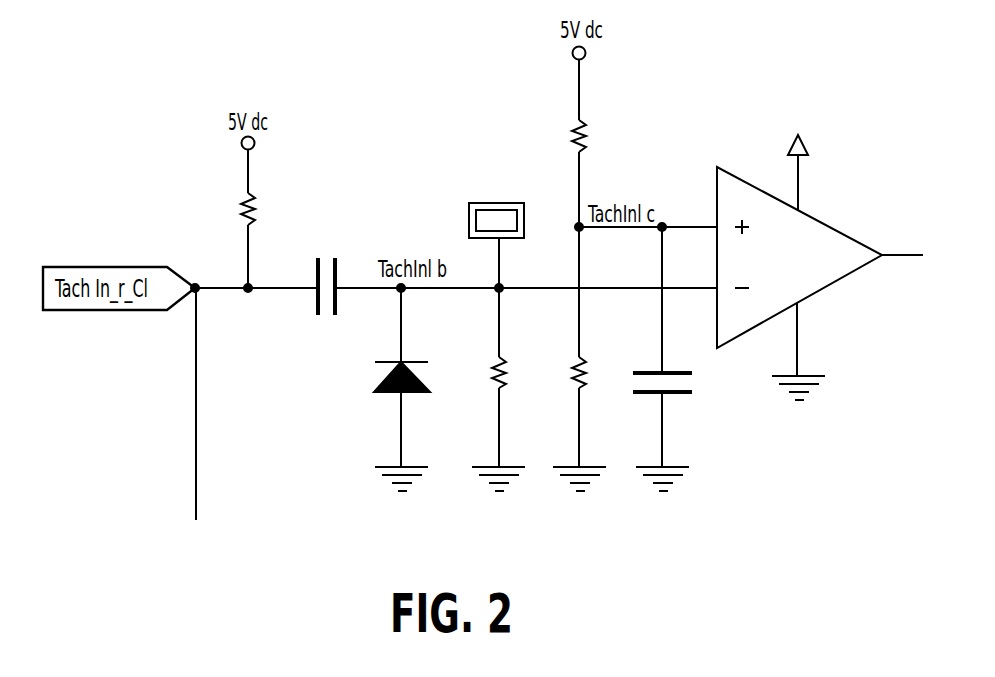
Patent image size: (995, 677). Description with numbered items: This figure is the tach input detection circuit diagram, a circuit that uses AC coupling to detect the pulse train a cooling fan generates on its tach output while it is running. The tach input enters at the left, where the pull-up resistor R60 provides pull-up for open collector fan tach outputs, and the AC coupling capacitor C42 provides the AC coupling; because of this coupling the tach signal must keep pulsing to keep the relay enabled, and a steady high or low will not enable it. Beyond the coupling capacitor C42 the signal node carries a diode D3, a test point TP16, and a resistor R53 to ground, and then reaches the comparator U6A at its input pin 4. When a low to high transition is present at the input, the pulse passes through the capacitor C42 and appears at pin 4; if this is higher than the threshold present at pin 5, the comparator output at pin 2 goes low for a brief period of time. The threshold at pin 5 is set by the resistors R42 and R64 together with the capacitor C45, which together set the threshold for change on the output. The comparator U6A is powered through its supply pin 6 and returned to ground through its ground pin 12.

The pull-up resistor R60 is at (269, 219).
The AC coupling capacitor C42 is at (323, 287).
The signal diode D3 is at (421, 377).
The test point TP16 is at (496, 216).
The resistor 100k R53 is at (517, 377).
The threshold resistor R42 is at (598, 143).
The threshold resistor R64 is at (597, 347).
The threshold capacitor C45 is at (686, 347).
The comparator LM2901A U6A is at (775, 228).
The comparator threshold pin 5 is at (689, 214).
The comparator input pin 4 is at (689, 272).
The comparator output pin 2 is at (902, 242).
The comparator supply pin 6 is at (799, 159).
The comparator ground pin 12 is at (782, 339).